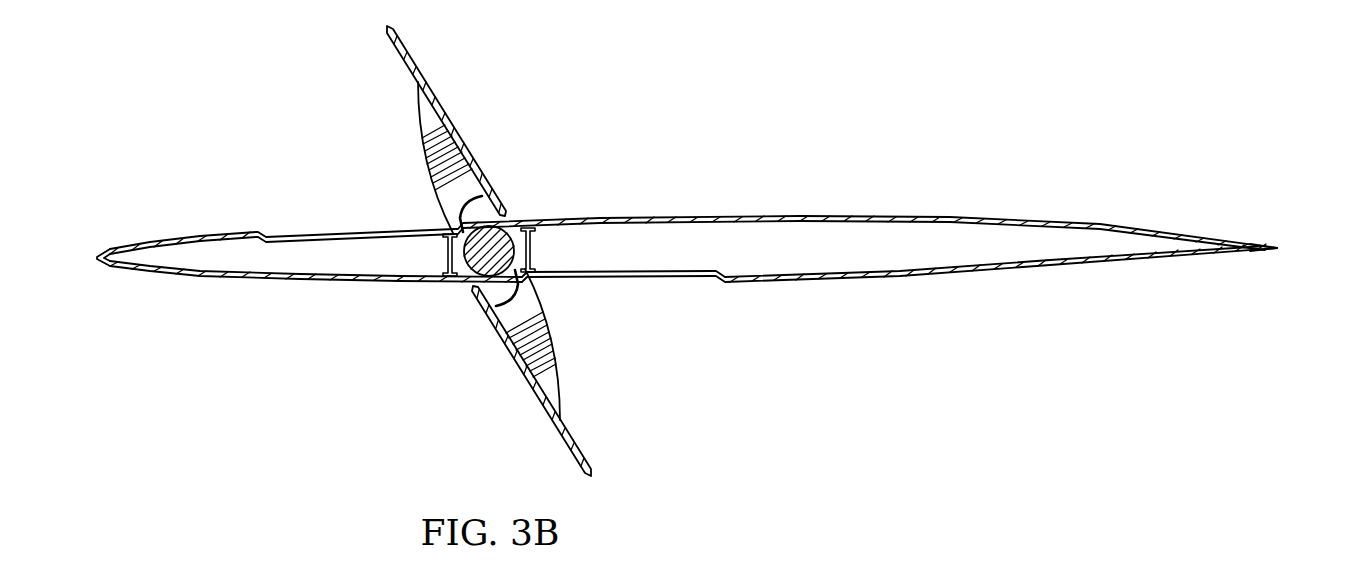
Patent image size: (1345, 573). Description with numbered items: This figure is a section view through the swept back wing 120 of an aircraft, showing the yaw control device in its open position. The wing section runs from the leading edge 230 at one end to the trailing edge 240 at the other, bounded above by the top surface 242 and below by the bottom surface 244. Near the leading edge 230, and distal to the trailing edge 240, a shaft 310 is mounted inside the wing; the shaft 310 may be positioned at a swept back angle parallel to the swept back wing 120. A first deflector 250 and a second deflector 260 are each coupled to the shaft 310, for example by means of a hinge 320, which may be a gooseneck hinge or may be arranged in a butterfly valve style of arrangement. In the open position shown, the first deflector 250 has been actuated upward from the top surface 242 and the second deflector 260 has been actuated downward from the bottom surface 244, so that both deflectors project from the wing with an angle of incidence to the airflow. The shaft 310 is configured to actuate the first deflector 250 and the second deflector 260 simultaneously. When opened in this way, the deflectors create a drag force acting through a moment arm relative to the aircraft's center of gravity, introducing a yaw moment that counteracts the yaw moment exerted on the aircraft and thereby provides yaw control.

The swept back wing 120 is at (687, 237).
The leading edge 230 is at (88, 258).
The trailing edge 240 is at (1295, 192).
The top surface 242 is at (683, 218).
The bottom surface 244 is at (358, 287).
The first deflector 250 is at (440, 108).
The second deflector 260 is at (527, 378).
The shaft 310 is at (497, 243).
The hinge 320 is at (424, 139).